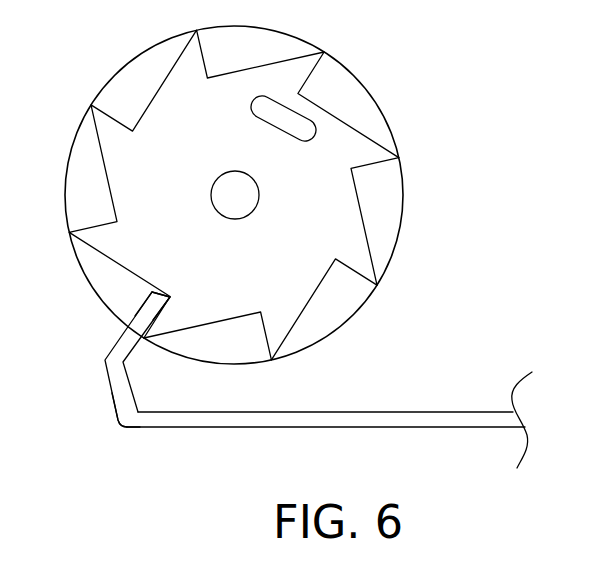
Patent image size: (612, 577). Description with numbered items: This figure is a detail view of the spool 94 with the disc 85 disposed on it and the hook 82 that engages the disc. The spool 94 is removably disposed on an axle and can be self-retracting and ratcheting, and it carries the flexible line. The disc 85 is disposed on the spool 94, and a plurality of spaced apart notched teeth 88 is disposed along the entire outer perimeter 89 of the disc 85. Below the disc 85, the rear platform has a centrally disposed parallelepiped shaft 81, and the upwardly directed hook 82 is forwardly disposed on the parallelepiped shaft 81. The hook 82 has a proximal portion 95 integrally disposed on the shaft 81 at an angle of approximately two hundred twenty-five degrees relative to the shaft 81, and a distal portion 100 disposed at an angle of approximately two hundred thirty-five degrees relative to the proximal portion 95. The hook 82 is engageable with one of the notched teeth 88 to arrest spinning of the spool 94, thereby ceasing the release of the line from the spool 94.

The parallelepiped shaft 81 is at (414, 412).
The hook 82 is at (115, 396).
The disc 85 is at (275, 288).
The notched teeth 88 is at (175, 313).
The outer perimeter 89 is at (354, 172).
The spool 94 is at (357, 103).
The proximal portion 95 is at (118, 380).
The distal portion 100 is at (128, 340).